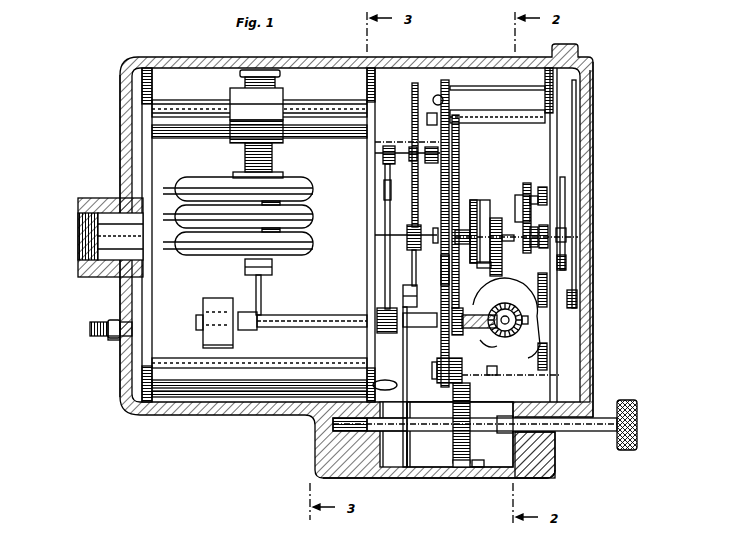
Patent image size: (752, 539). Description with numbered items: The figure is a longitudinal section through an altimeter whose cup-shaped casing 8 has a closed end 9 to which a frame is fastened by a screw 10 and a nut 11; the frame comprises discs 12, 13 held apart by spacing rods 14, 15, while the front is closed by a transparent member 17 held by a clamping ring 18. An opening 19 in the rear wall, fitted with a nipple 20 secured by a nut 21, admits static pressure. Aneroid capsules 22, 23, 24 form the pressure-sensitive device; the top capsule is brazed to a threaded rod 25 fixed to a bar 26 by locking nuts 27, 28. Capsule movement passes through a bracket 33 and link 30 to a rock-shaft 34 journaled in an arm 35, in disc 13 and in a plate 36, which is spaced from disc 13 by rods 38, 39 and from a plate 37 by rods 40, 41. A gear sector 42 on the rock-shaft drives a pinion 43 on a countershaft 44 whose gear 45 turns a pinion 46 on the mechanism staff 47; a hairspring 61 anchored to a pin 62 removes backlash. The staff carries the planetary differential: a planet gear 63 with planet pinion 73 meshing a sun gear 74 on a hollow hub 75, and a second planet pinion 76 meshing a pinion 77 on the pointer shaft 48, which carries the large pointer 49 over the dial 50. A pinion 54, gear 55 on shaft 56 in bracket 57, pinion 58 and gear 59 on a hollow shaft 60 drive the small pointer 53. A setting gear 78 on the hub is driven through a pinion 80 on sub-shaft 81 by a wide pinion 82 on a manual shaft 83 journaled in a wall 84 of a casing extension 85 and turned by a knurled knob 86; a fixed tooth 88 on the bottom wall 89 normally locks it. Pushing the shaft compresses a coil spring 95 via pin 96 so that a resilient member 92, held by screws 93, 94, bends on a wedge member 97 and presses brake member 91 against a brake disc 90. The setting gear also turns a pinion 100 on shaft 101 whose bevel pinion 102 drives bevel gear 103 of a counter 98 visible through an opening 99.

The casing 8 is at (298, 58).
The closed end 9 is at (121, 104).
The screw 10 is at (78, 228).
The nut 11 is at (86, 200).
The disc 12 is at (151, 302).
The disc 13 is at (367, 150).
The spacing rod 14 is at (178, 364).
The spacing rod 15 is at (170, 106).
The transparent member 17 is at (586, 360).
The clamping ring 18 is at (588, 412).
The opening 19 is at (133, 330).
The nipple 20 is at (104, 338).
The nut 21 is at (110, 324).
The aneroid capsule 22 is at (318, 255).
The aneroid capsule 23 is at (323, 232).
The aneroid capsule 24 is at (185, 183).
The threaded rod 25 is at (273, 160).
The bar 26 is at (284, 100).
The locking nut 27 is at (240, 89).
The locking nut 28 is at (238, 128).
The link 30 is at (261, 297).
The bracket 33 is at (272, 267).
The rock-shaft 34 is at (296, 326).
The arm 35 is at (226, 300).
The plate 36 is at (450, 84).
The plate 37 is at (545, 82).
The spacing rod 38 is at (387, 140).
The spacing rod 39 is at (378, 292).
The spacing rod 40 is at (483, 88).
The spacing rod 41 is at (493, 372).
The gear sector 42 is at (384, 188).
The pinion 43 is at (391, 150).
The countershaft 44 is at (390, 195).
The gear 45 is at (415, 90).
The pinion 46 is at (408, 233).
The mechanism staff 47 is at (434, 228).
The pointer shaft 48 is at (532, 247).
The large pointer 49 is at (577, 115).
The dial 50 is at (558, 137).
The small pointer 53 is at (565, 192).
The pinion 54 is at (542, 248).
The gear 55 is at (519, 192).
The shaft 56 is at (547, 195).
The bracket 57 is at (528, 190).
The pinion 58 is at (538, 195).
The gear 59 is at (566, 248).
The hollow shaft 60 is at (566, 235).
The hairspring 61 is at (424, 160).
The pin 62 is at (436, 102).
The planet gear 63 is at (474, 310).
The planet pinion 73 is at (482, 200).
The sun gear 74 is at (478, 268).
The hollow hub 75 is at (496, 250).
The planet pinion 76 is at (536, 292).
The pinion 77 is at (496, 218).
The setting gear 78 is at (459, 138).
The pinion 80 is at (478, 375).
The sub-shaft 81 is at (440, 370).
The pinion 82 is at (471, 405).
The manually operated shaft 83 is at (501, 435).
The wall 84 is at (556, 448).
The extension 85 is at (554, 478).
The knurled knob 86 is at (638, 421).
The gear tooth 88 is at (488, 470).
The bottom wall 89 is at (392, 468).
The brake disc 90 is at (441, 270).
The brake member 91 is at (403, 296).
The resilient member 92 is at (408, 352).
The screw 93 is at (438, 466).
The screw 94 is at (484, 466).
The coil spring 95 is at (365, 431).
The pin 96 is at (386, 422).
The wedge member 97 is at (385, 380).
The counter 98 is at (530, 356).
The opening 99 is at (548, 336).
The pinion 100 is at (466, 338).
The shaft 101 is at (500, 310).
The bevel pinion 102 is at (497, 344).
The bevel gear 103 is at (527, 322).